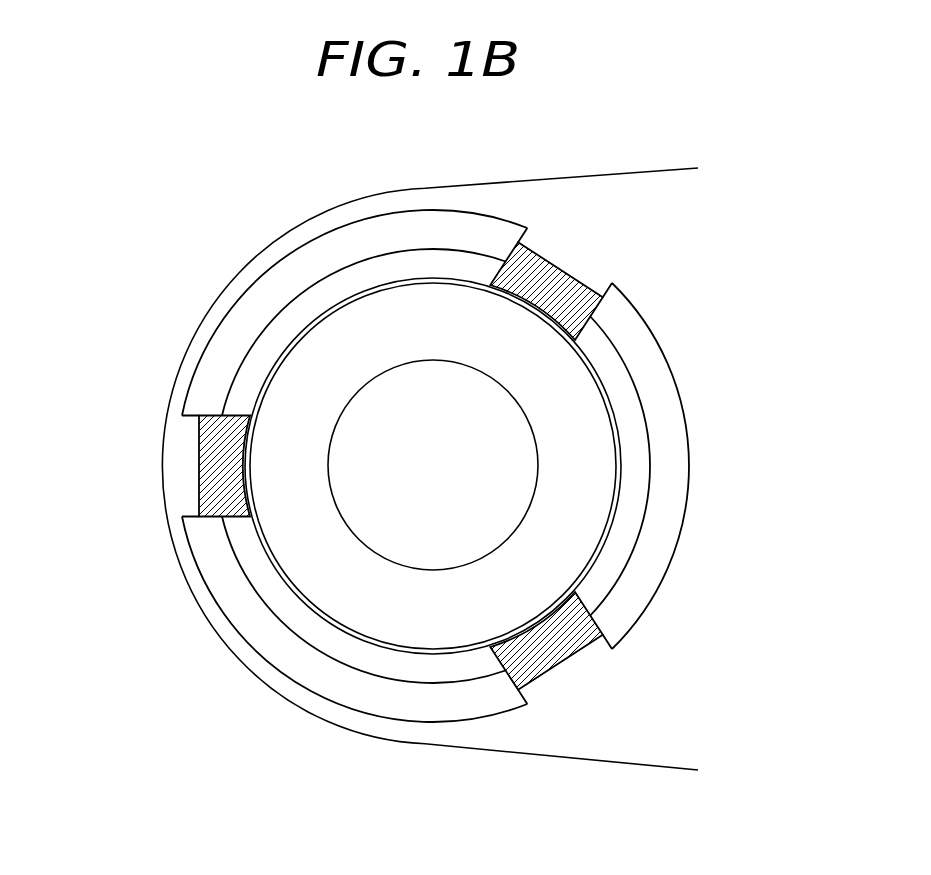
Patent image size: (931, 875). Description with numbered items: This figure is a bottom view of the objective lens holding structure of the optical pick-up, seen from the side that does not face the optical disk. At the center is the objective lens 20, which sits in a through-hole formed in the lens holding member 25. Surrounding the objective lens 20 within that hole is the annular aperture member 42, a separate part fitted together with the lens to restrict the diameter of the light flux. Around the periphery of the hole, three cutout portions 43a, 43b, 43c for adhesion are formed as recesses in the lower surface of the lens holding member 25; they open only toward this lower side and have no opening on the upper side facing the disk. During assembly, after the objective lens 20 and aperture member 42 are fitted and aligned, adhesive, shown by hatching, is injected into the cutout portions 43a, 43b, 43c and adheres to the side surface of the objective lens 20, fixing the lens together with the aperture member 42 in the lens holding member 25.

The objective lens 20 is at (381, 411).
The aperture member 42 is at (385, 328).
The cutout portion for adhesion 43a is at (218, 468).
The cutout portion for adhesion 43b is at (560, 285).
The cutout portion for adhesion 43c is at (556, 652).
The lens holding member 25 is at (652, 252).